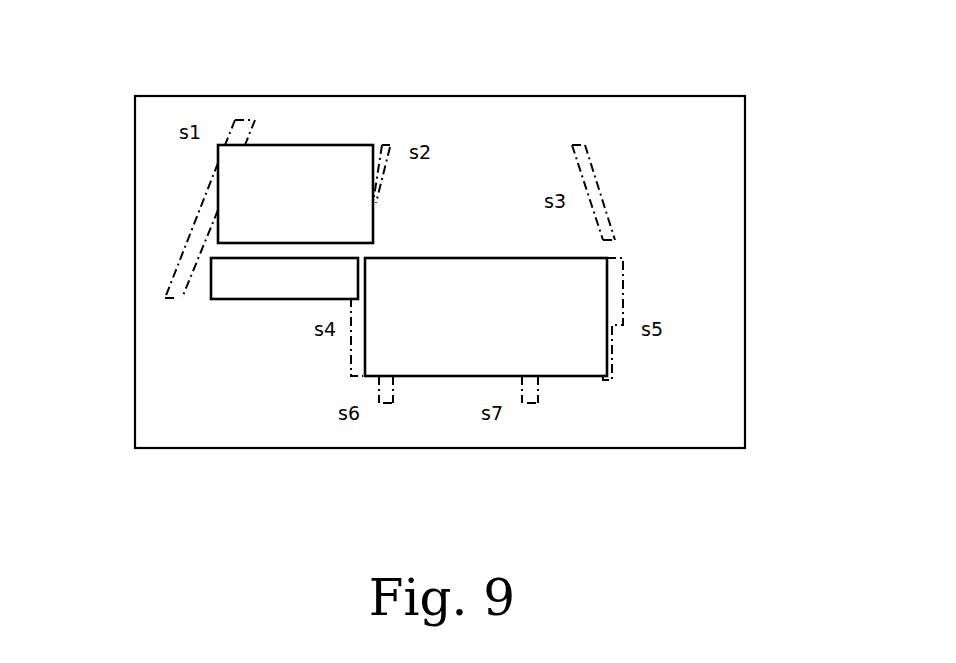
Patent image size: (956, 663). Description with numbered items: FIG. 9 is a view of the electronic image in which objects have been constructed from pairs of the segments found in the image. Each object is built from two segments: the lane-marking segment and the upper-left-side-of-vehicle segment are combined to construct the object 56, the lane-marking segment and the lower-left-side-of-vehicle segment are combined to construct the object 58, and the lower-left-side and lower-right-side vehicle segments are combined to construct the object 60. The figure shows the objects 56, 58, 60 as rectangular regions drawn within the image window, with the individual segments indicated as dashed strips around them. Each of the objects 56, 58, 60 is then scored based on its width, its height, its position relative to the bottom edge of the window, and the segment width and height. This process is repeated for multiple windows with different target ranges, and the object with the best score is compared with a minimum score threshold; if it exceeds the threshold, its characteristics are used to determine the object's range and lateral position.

The object 56 is at (309, 145).
The object 58 is at (228, 300).
The object 60 is at (578, 367).